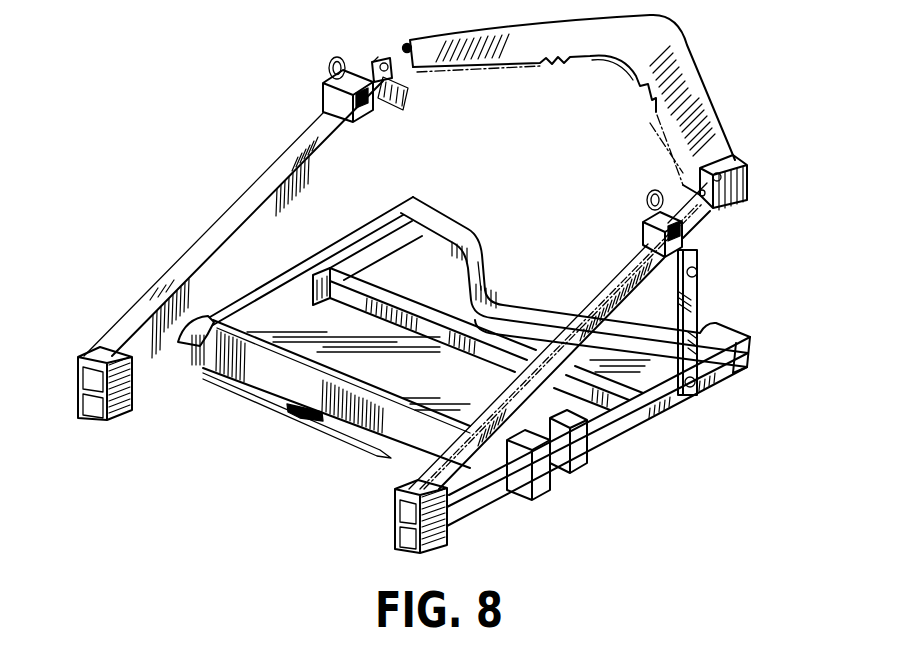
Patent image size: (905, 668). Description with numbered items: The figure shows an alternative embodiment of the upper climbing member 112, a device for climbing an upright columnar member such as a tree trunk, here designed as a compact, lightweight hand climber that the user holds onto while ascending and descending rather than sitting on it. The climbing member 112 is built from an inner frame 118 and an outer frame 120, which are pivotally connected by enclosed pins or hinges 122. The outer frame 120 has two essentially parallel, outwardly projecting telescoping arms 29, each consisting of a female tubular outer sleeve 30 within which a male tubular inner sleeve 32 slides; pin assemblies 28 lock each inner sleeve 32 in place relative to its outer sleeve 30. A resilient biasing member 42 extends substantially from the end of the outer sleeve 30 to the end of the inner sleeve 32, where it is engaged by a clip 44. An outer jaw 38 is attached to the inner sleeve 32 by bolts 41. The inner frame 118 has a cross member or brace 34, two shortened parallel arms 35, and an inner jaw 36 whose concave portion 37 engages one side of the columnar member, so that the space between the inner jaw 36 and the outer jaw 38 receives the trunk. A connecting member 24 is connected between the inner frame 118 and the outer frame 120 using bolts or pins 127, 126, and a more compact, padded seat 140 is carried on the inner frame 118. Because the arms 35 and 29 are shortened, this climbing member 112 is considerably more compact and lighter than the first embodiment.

The connecting member 24 is at (697, 310).
The pin assembly 28 is at (323, 97).
The telescoping arm 29 is at (300, 150).
The outer sleeve 30 is at (248, 192).
The inner sleeve 32 is at (392, 97).
The cross member 34 is at (368, 272).
The arm 35 is at (385, 213).
The inner jaw 36 is at (458, 230).
The concave portion 37 is at (473, 277).
The outer jaw 38 is at (678, 58).
The bolt 41 is at (382, 62).
The resilient biasing member 42 is at (722, 227).
The clip 44 is at (749, 180).
The upper climbing member 112 is at (138, 284).
The inner frame 118 is at (597, 462).
The outer frame 120 is at (180, 226).
The enclosed pin 122 is at (80, 402).
The pin 126 is at (695, 387).
The pin 127 is at (697, 272).
The padded seat 140 is at (300, 324).